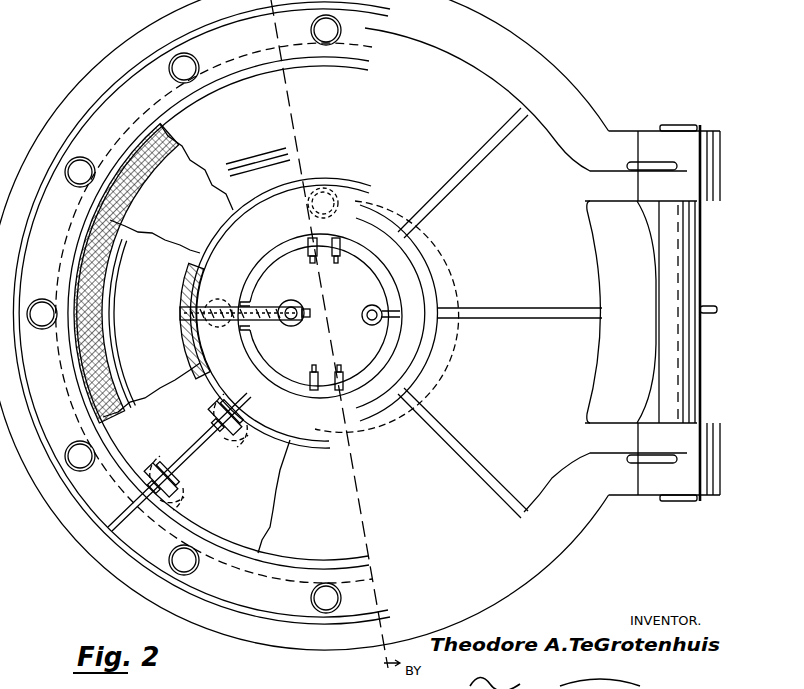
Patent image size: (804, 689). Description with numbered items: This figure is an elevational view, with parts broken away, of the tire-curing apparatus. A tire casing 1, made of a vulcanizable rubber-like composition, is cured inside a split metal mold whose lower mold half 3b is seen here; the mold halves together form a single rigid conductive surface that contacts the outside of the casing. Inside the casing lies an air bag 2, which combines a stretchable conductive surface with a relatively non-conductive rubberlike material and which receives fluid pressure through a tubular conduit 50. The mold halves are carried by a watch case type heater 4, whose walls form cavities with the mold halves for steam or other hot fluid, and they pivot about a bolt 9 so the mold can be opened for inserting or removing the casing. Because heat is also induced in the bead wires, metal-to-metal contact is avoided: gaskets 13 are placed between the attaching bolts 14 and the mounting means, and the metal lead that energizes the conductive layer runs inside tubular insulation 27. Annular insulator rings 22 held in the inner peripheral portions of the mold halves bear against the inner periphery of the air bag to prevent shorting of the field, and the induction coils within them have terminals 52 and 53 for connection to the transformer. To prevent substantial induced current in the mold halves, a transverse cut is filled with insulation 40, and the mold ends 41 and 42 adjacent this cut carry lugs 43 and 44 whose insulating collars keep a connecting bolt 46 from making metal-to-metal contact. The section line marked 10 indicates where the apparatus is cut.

The tire casing 1 is at (78, 263).
The air bag 2 is at (101, 270).
The lower mold half 3b is at (227, 545).
The watch case type heater 4 is at (110, 56).
The bolt 9 is at (700, 284).
The section line 10 is at (335, 338).
The gaskets 13 is at (178, 80).
The attaching bolts 14 is at (184, 57).
The annular insulator rings 22 is at (182, 291).
The insulation 27 is at (272, 300).
The insulation 40 is at (105, 540).
The mold end 41 is at (141, 518).
The mold end 42 is at (138, 518).
The lug 43 is at (190, 440).
The lug 44 is at (160, 463).
The connecting bolt 46 is at (240, 442).
The tubular conduit 50 is at (385, 299).
The coil terminal 52 is at (337, 260).
The coil terminal 53 is at (338, 363).